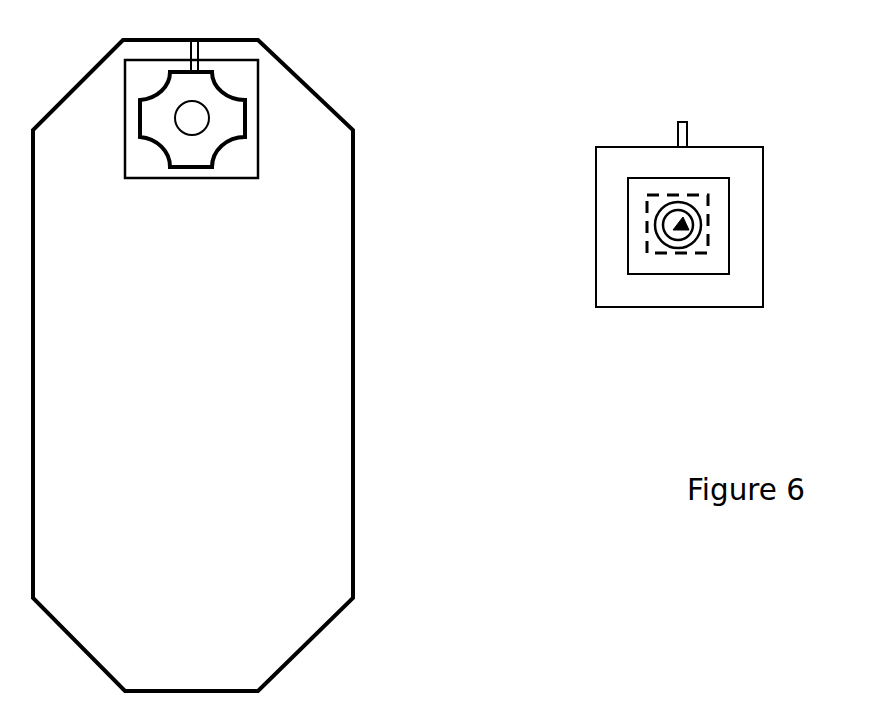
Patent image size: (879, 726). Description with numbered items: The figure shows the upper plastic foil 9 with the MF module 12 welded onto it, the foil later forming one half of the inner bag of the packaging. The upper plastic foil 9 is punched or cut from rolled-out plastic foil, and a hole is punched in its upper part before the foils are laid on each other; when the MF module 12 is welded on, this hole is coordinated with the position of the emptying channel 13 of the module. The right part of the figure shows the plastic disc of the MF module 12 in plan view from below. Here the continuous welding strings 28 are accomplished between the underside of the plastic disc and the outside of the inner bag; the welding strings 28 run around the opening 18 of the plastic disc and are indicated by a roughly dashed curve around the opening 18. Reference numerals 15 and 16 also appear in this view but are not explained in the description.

The upper plastic foil 9 is at (352, 402).
The MF module 12 is at (257, 153).
The emptying channel 13 is at (690, 247).
The outer frame 15 is at (622, 307).
The inner frame 16 is at (628, 197).
The opening 18 is at (690, 220).
The welding strings 28 is at (710, 245).